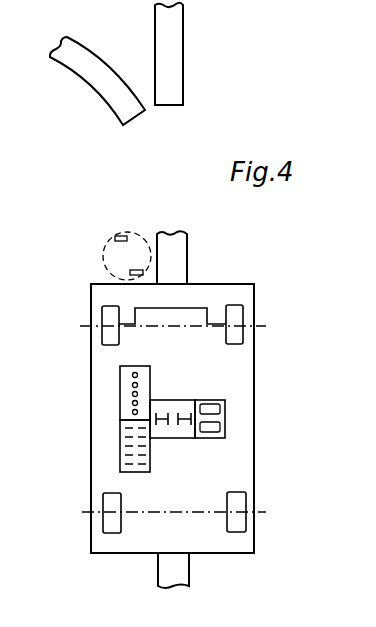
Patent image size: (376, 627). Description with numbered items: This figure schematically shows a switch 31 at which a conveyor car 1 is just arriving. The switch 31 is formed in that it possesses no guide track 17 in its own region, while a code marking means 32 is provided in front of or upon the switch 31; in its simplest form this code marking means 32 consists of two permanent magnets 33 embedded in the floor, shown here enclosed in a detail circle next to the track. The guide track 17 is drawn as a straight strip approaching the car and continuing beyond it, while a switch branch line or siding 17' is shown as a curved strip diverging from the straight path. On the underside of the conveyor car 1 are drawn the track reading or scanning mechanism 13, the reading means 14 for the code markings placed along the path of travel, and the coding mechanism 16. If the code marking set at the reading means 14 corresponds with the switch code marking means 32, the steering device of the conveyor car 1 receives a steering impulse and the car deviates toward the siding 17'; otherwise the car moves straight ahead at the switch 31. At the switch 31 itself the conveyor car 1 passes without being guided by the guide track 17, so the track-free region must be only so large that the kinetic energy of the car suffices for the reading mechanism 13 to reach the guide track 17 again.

The conveyor car 1 is at (255, 365).
The track reading mechanism 13 is at (168, 408).
The reading means for code markings 14 is at (150, 459).
The coding mechanism 16 is at (128, 387).
The guide track 17 is at (187, 295).
The switch branch line or siding 17' is at (97, 81).
The switch 31 is at (183, 170).
The code marking means 32 is at (104, 261).
The permanent magnets 33 is at (131, 271).